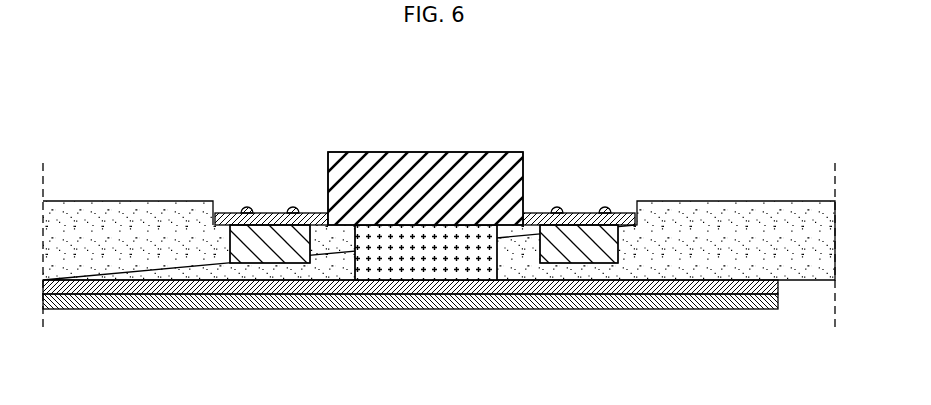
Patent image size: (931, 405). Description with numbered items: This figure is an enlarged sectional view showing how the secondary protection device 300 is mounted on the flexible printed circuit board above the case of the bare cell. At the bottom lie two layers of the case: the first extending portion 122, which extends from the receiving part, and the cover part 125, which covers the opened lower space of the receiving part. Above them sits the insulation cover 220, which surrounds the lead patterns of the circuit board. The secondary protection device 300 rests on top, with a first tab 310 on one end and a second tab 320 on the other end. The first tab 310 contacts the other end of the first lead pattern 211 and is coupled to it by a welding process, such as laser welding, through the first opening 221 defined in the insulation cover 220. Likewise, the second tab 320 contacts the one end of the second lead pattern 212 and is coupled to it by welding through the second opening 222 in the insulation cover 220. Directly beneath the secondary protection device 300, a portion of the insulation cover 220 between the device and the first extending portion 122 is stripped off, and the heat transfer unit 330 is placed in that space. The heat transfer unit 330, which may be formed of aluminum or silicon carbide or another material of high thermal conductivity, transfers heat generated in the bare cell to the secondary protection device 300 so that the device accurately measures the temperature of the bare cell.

The first extending portion 122 is at (741, 302).
The cover part 125 is at (672, 292).
The insulation cover 220 is at (110, 222).
The first lead pattern 211 is at (575, 252).
The second lead pattern 212 is at (267, 250).
The first opening 221 is at (577, 198).
The second opening 222 is at (275, 198).
The secondary protection device 300 is at (418, 152).
The first tab 310 is at (617, 213).
The second tab 320 is at (237, 213).
The heat transfer unit 330 is at (443, 250).